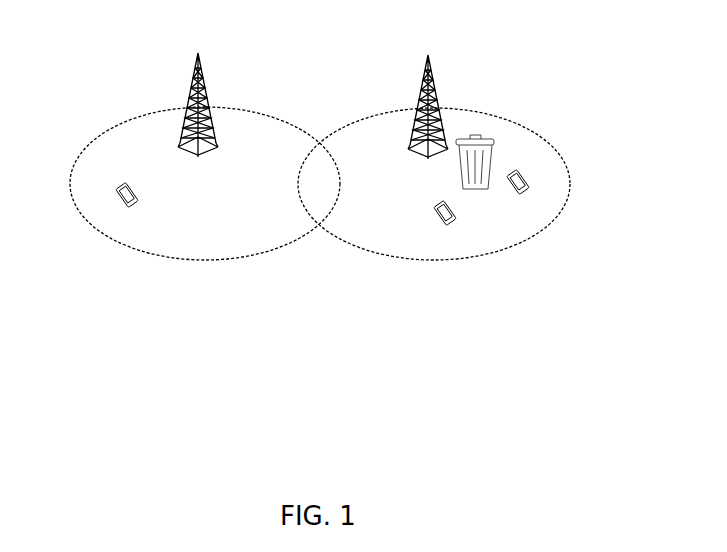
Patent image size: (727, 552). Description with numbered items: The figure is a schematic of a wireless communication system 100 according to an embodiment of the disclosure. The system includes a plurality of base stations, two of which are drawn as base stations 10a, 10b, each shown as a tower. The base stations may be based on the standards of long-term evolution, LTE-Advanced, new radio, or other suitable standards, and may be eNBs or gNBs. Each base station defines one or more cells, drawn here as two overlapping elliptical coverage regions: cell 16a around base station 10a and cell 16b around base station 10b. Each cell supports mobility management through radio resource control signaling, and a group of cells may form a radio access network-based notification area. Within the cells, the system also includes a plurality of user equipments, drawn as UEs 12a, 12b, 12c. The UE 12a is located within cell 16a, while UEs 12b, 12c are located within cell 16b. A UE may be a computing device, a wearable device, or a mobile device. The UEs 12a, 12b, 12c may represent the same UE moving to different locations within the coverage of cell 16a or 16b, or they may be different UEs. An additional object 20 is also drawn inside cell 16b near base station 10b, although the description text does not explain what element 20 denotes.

The wireless communication system 100 is at (594, 66).
The base station 10a is at (212, 60).
The base station 10b is at (456, 59).
The UE 12a is at (100, 177).
The UE 12b is at (543, 199).
The UE 12c is at (465, 232).
The cell 16a is at (230, 233).
The cell 16b is at (391, 230).
The trash receptacle / IoT device 20 is at (504, 141).